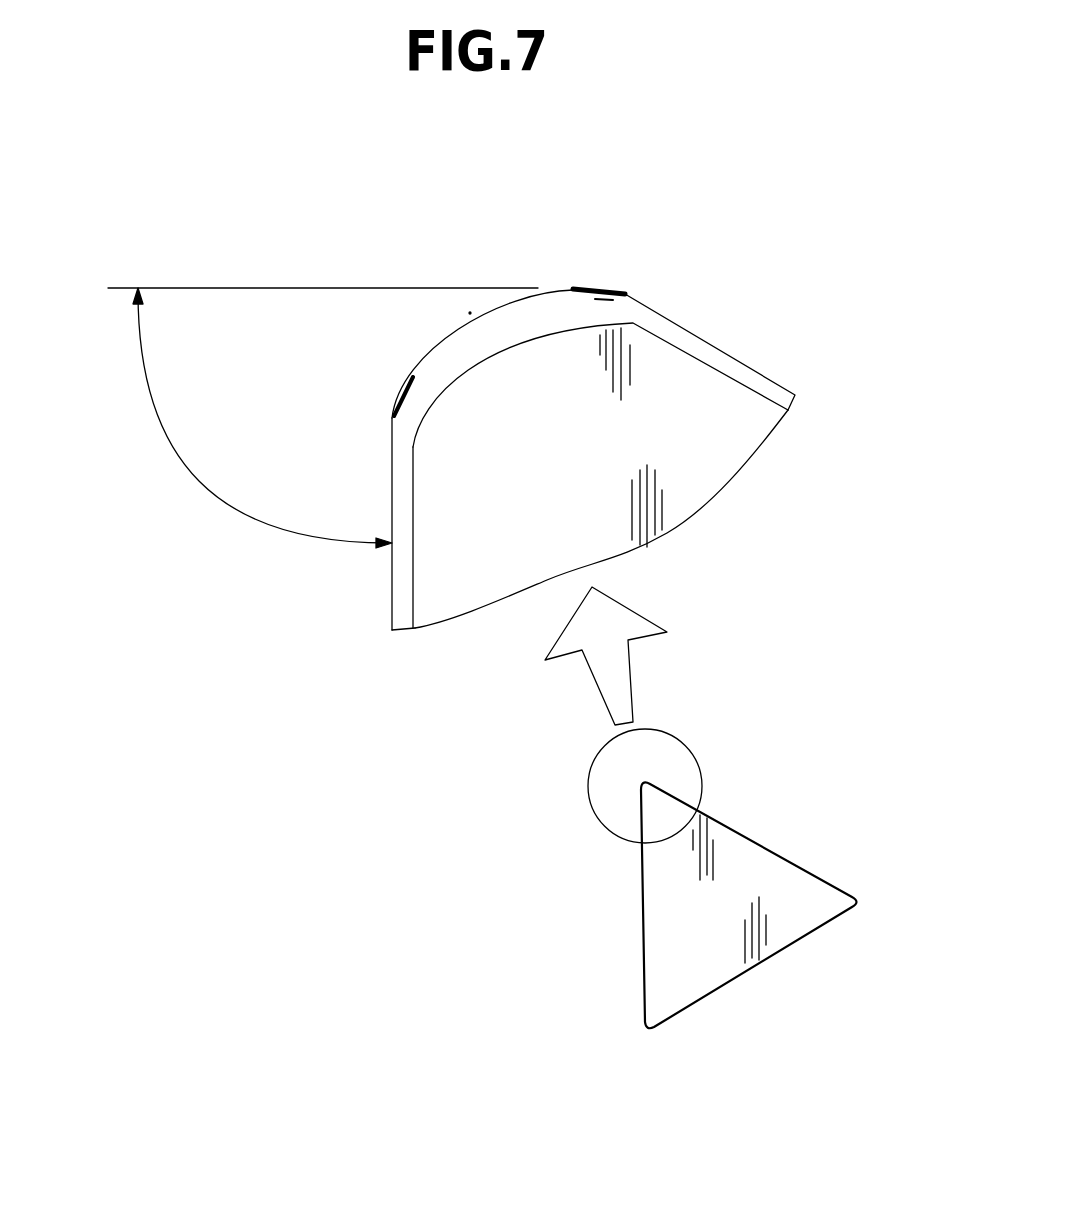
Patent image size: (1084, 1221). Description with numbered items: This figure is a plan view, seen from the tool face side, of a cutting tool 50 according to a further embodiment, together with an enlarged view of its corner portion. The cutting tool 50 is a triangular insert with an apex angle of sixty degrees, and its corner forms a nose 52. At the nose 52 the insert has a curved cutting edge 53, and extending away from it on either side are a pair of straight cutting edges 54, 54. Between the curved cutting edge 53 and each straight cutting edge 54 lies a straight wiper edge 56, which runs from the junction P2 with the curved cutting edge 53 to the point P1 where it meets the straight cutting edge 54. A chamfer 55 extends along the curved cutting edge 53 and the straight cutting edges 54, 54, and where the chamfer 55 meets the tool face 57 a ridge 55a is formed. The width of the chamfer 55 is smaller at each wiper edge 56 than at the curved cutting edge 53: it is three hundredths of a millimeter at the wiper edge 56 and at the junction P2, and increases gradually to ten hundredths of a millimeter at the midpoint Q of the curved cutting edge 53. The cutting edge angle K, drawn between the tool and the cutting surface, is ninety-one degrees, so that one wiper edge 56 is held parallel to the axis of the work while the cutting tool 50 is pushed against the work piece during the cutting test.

The cutting tool 50 is at (500, 584).
The nose 52 is at (410, 272).
The curved cutting edge 53 is at (453, 330).
The straight cutting edge 54 is at (745, 360).
The chamfer 55 is at (487, 335).
The ridge 55a is at (452, 392).
The wiper edge 56 is at (590, 291).
The tool face 57 is at (450, 523).
The junction of wiper edge and straight cutting edge P1 is at (626, 292).
The junction of curved cutting edge and wiper edge P2 is at (573, 289).
The midpoint of curved cutting edge Q is at (470, 313).
The cutting edge angle K is at (262, 418).